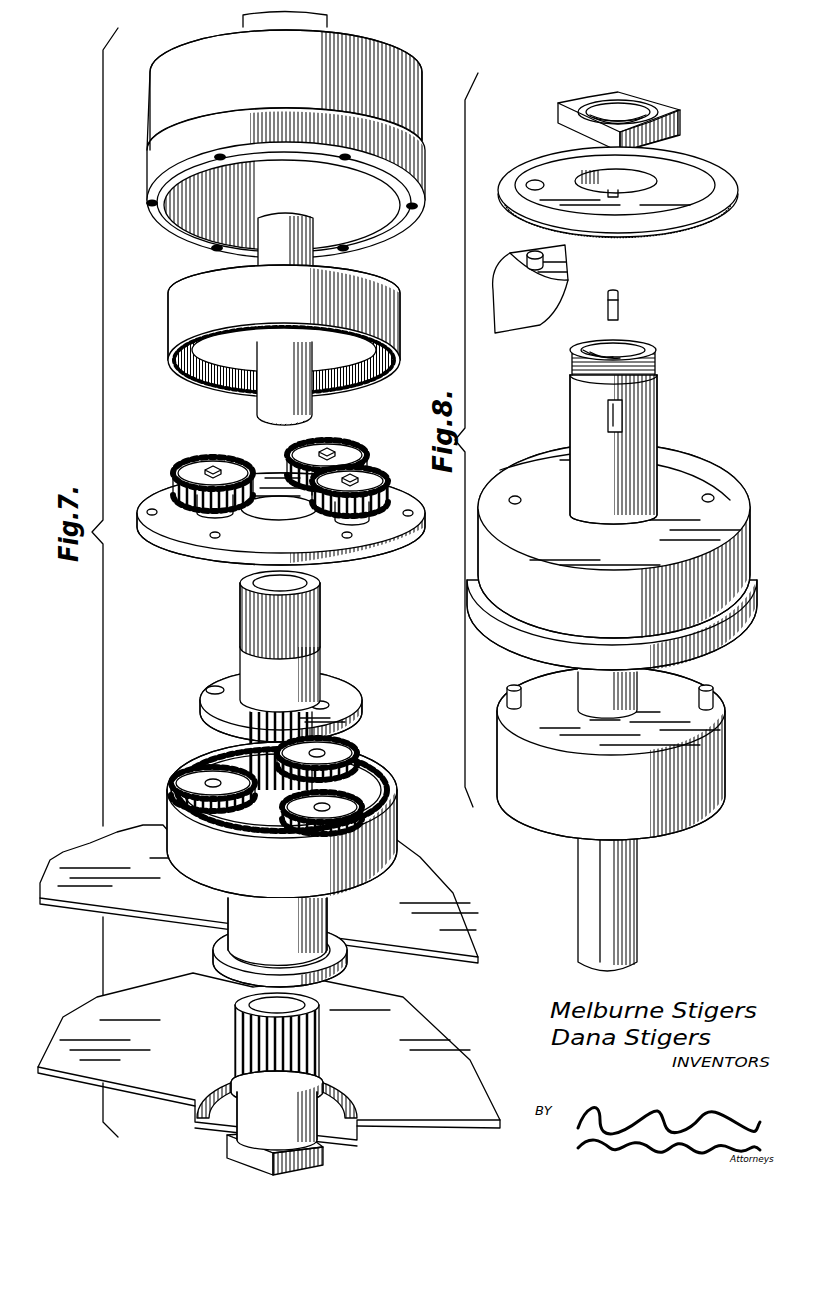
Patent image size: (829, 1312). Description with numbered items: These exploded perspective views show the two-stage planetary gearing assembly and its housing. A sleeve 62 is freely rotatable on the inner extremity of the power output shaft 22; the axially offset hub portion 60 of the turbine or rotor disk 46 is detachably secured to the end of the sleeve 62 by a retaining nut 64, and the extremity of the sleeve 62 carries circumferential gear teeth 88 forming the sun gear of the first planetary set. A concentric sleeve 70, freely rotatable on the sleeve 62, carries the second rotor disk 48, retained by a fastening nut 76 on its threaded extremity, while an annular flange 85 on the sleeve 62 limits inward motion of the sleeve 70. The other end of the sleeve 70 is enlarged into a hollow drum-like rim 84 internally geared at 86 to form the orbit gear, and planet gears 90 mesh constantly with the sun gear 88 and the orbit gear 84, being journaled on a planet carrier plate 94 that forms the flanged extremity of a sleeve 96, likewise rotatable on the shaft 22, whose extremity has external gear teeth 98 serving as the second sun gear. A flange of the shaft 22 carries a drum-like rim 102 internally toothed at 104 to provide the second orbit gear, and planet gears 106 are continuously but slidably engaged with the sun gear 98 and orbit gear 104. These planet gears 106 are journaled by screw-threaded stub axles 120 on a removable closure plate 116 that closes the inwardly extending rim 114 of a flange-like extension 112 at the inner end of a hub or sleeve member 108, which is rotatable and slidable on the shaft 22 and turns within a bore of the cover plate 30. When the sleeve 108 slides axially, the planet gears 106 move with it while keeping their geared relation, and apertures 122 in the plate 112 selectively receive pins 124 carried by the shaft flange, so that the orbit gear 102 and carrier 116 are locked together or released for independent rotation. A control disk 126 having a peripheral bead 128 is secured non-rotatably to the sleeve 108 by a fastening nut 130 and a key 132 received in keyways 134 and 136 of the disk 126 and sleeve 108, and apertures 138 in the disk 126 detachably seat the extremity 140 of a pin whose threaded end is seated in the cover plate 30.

In FIG. 7, the power output shaft 22 is at (257, 405).
In FIG. 8, the power output shaft 22 is at (637, 712).
In FIG. 8, the cover plate 30 is at (523, 282).
In FIG. 7, the turbine or rotor disk 46 is at (172, 1083).
In FIG. 7, the turbine or rotor disk 48 is at (110, 852).
In FIG. 7, the hub portion 60 is at (335, 1130).
In FIG. 7, the sleeve 62 is at (248, 1097).
In FIG. 7, the retaining nut 64 is at (247, 1160).
In FIG. 7, the concentric sleeve 70 is at (317, 915).
In FIG. 7, the fastening nut 76 is at (220, 957).
In FIG. 7, the drum-like flange or rim 84 is at (180, 820).
In FIG. 7, the annular flange 85 is at (320, 1072).
In FIG. 7, the internal gearing 86 is at (210, 743).
In FIG. 7, the sun gear 88 is at (263, 1042).
In FIG. 7, the planet gears 90 is at (197, 780).
In FIG. 7, the planet carrier plate 94 is at (220, 677).
In FIG. 7, the sleeve 96 is at (257, 657).
In FIG. 7, the sun gear 98 is at (257, 608).
In FIG. 7, the drum-like rim 102 is at (180, 317).
In FIG. 8, the drum-like rim 102 is at (532, 802).
In FIG. 7, the orbit gear 104 is at (193, 378).
In FIG. 7, the planet gears 106 is at (192, 458).
In FIG. 8, the hub or sleeve member 108 is at (582, 432).
In FIG. 8, the flange-like extension 112 is at (687, 467).
In FIG. 7, the rim 114 is at (160, 108).
In FIG. 8, the rim 114 is at (733, 558).
In FIG. 7, the closure plate 116 is at (170, 503).
In FIG. 7, the stub axles 120 is at (367, 513).
In FIG. 8, the apertures 122 is at (521, 499).
In FIG. 8, the pins 124 is at (522, 697).
In FIG. 8, the control disk 126 is at (663, 197).
In FIG. 8, the peripheral bead 128 is at (707, 210).
In FIG. 8, the fastening nut 130 is at (563, 127).
In FIG. 8, the key 132 is at (618, 305).
In FIG. 8, the keyway 134 is at (615, 195).
In FIG. 8, the keyway 136 is at (620, 432).
In FIG. 8, the apertures 138 is at (537, 183).
In FIG. 8, the pin extremity 140 is at (532, 253).